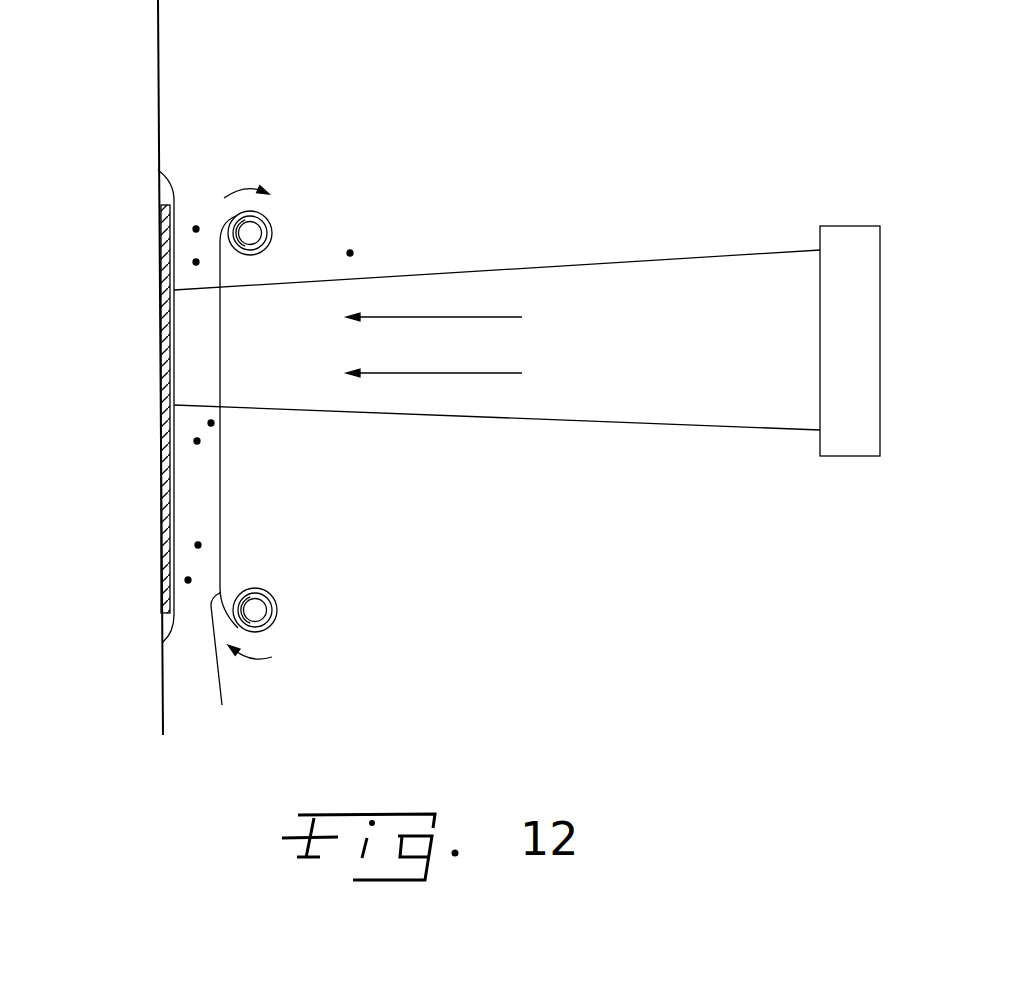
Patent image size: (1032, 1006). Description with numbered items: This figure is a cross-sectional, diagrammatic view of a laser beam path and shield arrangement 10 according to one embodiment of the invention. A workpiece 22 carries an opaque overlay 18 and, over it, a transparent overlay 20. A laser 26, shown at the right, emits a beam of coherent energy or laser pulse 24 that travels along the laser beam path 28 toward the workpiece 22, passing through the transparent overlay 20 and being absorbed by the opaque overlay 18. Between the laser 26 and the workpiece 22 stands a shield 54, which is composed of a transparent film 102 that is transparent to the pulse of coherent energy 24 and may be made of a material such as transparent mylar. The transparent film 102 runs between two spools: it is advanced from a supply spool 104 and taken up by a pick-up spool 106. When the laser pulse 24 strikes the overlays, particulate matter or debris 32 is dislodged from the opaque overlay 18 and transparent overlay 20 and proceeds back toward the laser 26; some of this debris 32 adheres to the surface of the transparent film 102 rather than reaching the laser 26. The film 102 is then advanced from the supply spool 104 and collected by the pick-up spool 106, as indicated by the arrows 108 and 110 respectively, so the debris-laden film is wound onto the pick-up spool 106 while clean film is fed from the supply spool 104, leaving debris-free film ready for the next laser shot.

The cleaning system 10 is at (383, 121).
The opaque overlay 18 is at (162, 341).
The transparent overlay 20 is at (162, 186).
The workpiece 22 is at (157, 67).
The laser pulse 24 is at (463, 317).
The laser 26 is at (868, 225).
The laser beam path 28 is at (487, 406).
The debris 32 is at (196, 229).
The shield 54 is at (213, 205).
The transparent film 102 is at (226, 667).
The supply spool 104 is at (276, 626).
The pick-up spool 106 is at (268, 222).
The arrow 108 is at (254, 663).
The arrow 110 is at (251, 190).